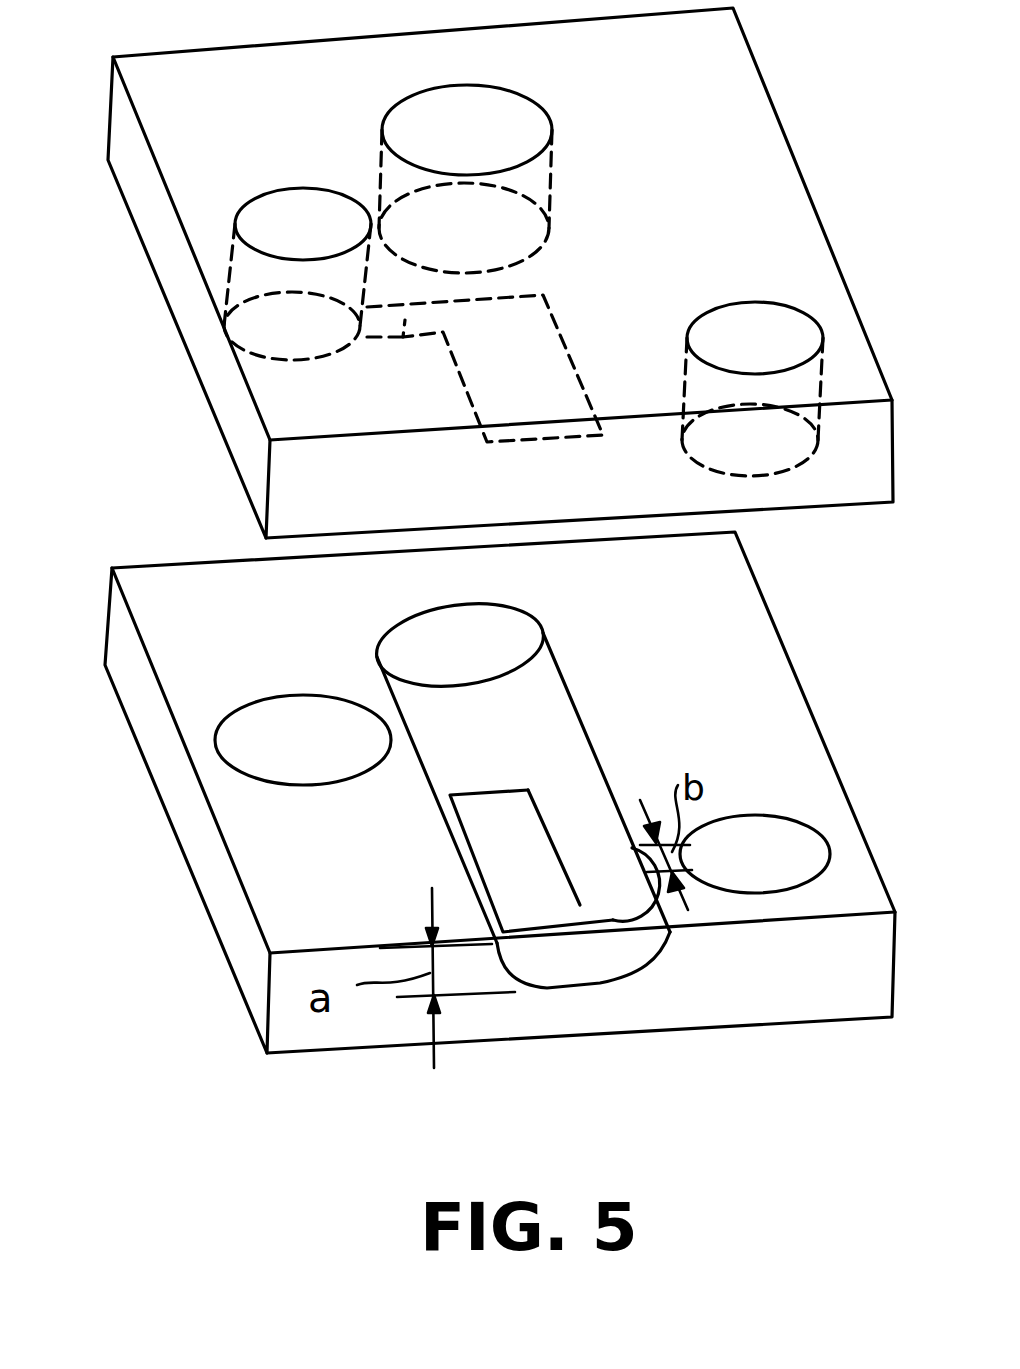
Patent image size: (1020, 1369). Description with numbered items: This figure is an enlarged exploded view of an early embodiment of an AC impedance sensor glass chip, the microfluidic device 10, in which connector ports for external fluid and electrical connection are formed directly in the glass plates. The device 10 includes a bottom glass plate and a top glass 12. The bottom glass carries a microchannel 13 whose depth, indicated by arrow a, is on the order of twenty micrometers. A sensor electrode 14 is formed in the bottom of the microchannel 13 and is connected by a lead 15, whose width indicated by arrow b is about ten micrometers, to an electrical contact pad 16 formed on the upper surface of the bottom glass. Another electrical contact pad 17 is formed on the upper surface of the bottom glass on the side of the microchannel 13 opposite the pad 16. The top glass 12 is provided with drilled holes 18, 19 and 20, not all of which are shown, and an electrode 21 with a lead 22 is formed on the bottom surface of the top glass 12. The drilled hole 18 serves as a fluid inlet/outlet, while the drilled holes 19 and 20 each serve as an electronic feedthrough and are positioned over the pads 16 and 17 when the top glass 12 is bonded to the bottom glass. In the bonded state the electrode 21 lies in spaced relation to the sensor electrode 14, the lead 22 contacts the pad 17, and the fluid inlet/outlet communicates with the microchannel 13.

The microfluidic device 10 is at (170, 976).
The top glass 12 is at (810, 192).
The microchannel 13 is at (622, 958).
The sensor electrode 14 is at (480, 825).
The lead 15 is at (590, 905).
The electrical contact pad 16 is at (742, 852).
The electrical contact pad 17 is at (270, 742).
The drilled hole 18 is at (492, 137).
The drilled hole 19 is at (740, 338).
The drilled hole 20 is at (287, 228).
The electrode 21 is at (540, 360).
The lead 22 is at (405, 347).